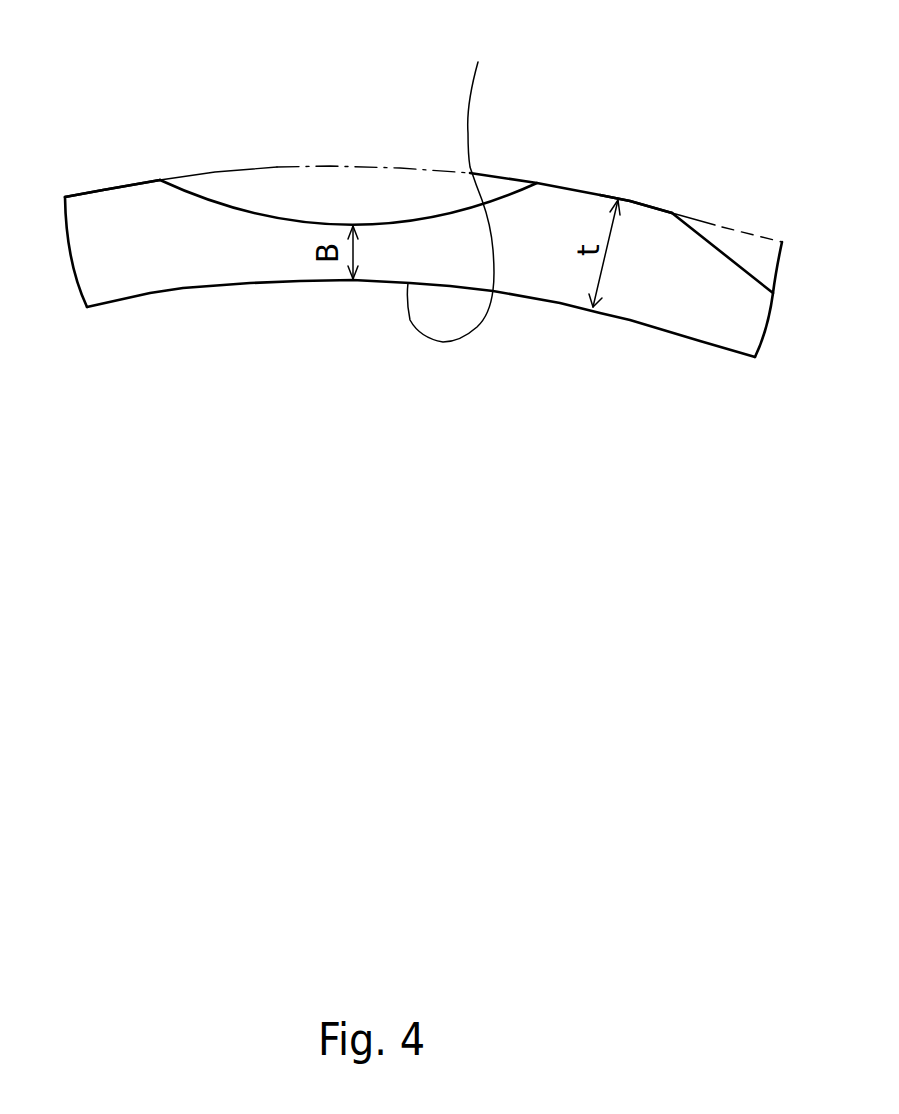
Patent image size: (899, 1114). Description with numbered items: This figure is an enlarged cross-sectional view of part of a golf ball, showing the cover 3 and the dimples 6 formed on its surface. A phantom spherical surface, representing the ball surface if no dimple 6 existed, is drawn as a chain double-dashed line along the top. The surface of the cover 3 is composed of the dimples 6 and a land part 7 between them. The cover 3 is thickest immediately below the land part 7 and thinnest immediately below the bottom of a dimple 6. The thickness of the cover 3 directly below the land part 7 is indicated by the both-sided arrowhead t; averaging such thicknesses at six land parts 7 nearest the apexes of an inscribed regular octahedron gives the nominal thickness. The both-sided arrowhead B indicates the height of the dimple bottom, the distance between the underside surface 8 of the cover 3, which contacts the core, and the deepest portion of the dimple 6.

The cover 3 is at (182, 257).
The dimple 6 is at (243, 208).
The land part 7 is at (103, 189).
The underside surface 8 is at (453, 176).